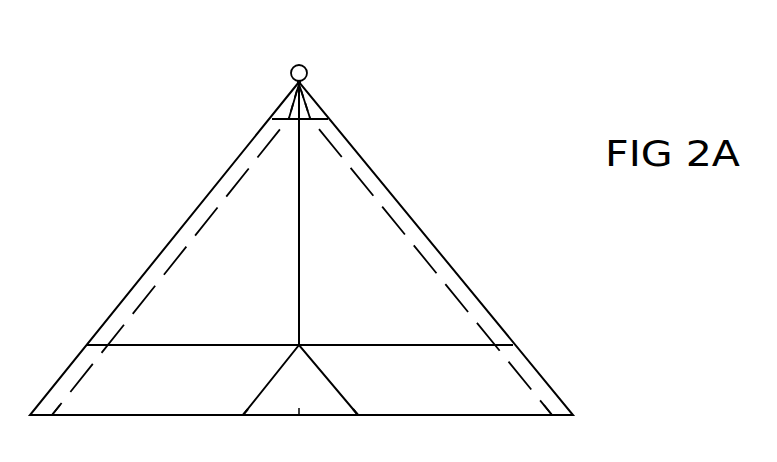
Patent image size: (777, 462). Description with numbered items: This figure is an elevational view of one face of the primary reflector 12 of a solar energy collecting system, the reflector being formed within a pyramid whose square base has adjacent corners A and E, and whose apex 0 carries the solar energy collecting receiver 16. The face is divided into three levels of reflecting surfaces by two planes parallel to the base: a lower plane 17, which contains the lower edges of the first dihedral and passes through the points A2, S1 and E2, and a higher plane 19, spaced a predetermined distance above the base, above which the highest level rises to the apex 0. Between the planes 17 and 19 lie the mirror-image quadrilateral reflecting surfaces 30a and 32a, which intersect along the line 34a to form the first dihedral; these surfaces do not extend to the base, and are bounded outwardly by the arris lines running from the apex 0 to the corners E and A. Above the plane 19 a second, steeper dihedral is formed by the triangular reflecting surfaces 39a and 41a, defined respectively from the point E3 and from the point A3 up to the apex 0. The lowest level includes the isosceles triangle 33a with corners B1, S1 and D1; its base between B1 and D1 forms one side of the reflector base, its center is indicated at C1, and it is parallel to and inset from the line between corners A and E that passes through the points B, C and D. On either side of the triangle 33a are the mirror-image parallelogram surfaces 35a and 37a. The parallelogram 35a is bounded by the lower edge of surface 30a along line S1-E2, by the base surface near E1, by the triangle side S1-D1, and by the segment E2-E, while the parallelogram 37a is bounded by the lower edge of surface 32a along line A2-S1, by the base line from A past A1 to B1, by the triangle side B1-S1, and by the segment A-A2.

The primary reflector 12 is at (468, 110).
The solar energy collecting receiver 16 is at (294, 67).
The apex 0 is at (305, 71).
The plane containing lower edges of dihedrals 17 is at (445, 342).
The plane 19 is at (323, 110).
The reflecting surface 39a is at (317, 110).
The reflecting surface 41a is at (288, 93).
The line of intersection 34a is at (300, 208).
The reflecting surface 32a is at (230, 234).
The reflecting surface 30a is at (323, 234).
The isosceles triangle 33a is at (288, 401).
The parallelogram reflecting surface 35a is at (383, 389).
The parallelogram reflecting surface 37a is at (146, 389).
The point A3 is at (272, 119).
The point E3 is at (333, 117).
The point A2 is at (87, 345).
The point E2 is at (513, 344).
The point S1 is at (300, 345).
The corner A is at (27, 415).
The corner E is at (578, 417).
The point A1 is at (52, 415).
The point E1 is at (552, 415).
The point B is at (243, 415).
The point B1 is at (234, 424).
The point C is at (300, 415).
The point C1 is at (301, 423).
The point D is at (358, 415).
The point D1 is at (362, 424).